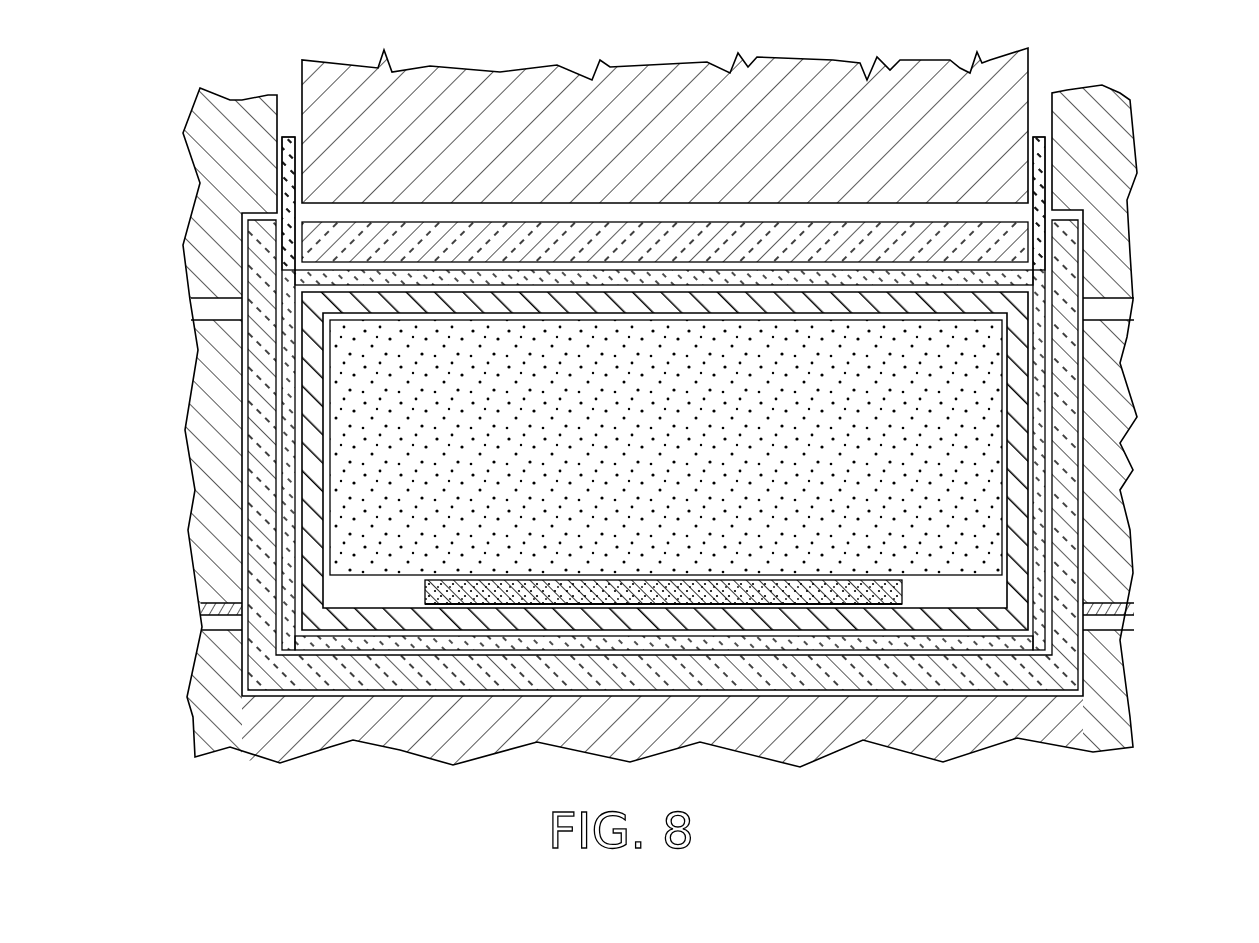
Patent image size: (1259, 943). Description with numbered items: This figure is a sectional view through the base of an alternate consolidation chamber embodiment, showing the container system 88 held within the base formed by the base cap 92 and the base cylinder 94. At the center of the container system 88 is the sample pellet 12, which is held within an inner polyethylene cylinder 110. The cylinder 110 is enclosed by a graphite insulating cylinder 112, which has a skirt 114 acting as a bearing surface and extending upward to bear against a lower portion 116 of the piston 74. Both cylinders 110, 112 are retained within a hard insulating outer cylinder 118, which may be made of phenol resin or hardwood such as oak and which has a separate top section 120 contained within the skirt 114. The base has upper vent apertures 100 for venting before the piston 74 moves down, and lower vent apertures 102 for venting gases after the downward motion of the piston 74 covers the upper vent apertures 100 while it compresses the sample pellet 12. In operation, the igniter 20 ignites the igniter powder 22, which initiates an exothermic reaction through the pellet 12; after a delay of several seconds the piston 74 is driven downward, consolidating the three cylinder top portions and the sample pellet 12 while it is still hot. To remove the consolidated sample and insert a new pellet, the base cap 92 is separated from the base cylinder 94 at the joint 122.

The sample pellet 12 is at (673, 487).
The igniter 20 is at (677, 605).
The igniter powder 22 is at (850, 607).
The piston 74 is at (953, 144).
The container system 88 is at (460, 210).
The base cap 92 is at (392, 733).
The base cylinder 94 is at (207, 456).
The upper vent apertures 100 is at (220, 312).
The lower vent apertures 102 is at (225, 626).
The inner polyethylene cylinder 110 is at (1020, 522).
The graphite insulating cylinder 112 is at (1040, 482).
The skirt 114 is at (290, 137).
The lower portion of piston 116 is at (1010, 168).
The hard insulating outer cylinder 118 is at (1070, 443).
The top section 120 is at (713, 223).
The joint 122 is at (217, 603).